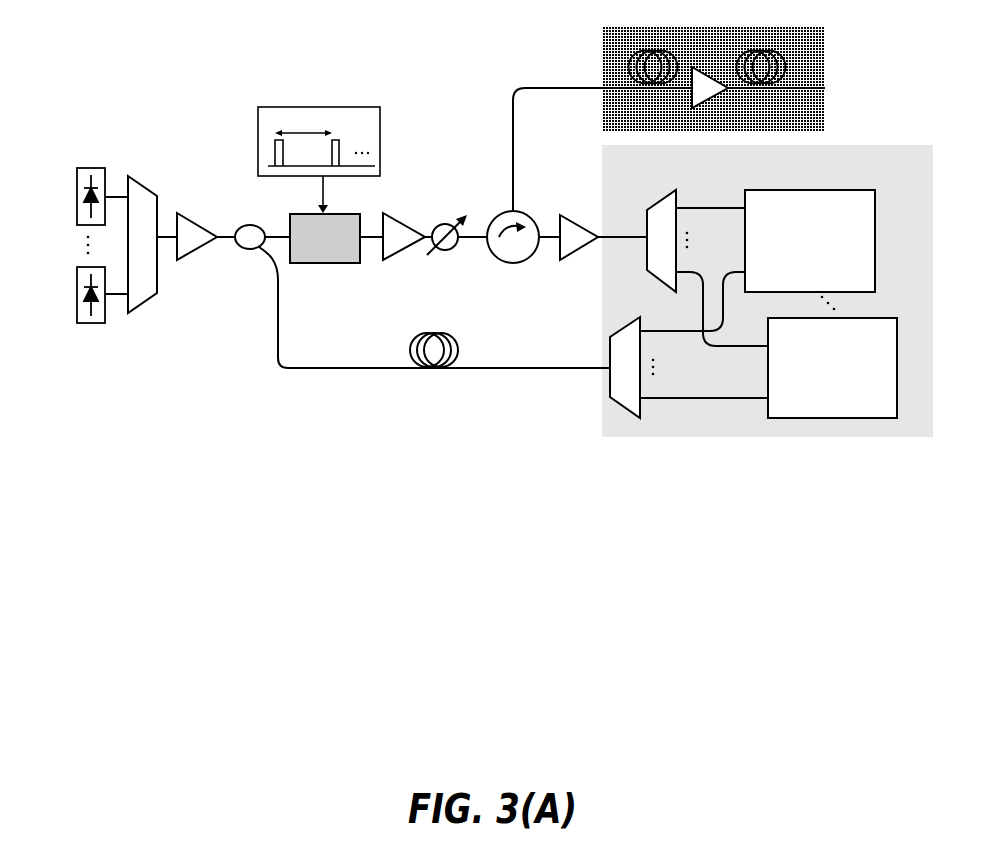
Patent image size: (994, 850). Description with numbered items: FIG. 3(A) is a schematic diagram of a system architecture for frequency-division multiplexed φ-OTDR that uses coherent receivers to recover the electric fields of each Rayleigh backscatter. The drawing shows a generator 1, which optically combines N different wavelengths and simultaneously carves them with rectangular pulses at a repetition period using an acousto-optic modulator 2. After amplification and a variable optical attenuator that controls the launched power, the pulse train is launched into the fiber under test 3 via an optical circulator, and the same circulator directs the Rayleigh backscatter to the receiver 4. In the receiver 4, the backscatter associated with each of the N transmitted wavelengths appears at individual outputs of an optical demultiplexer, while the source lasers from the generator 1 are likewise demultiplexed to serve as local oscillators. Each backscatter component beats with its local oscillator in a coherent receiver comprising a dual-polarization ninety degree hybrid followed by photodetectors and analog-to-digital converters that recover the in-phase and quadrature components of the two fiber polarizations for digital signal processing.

The generator 1 is at (200, 128).
The acousto-optic modulator (AOM) 2 is at (292, 216).
The fiber under test (FUT) 3 is at (606, 120).
The receiver 4 is at (920, 430).